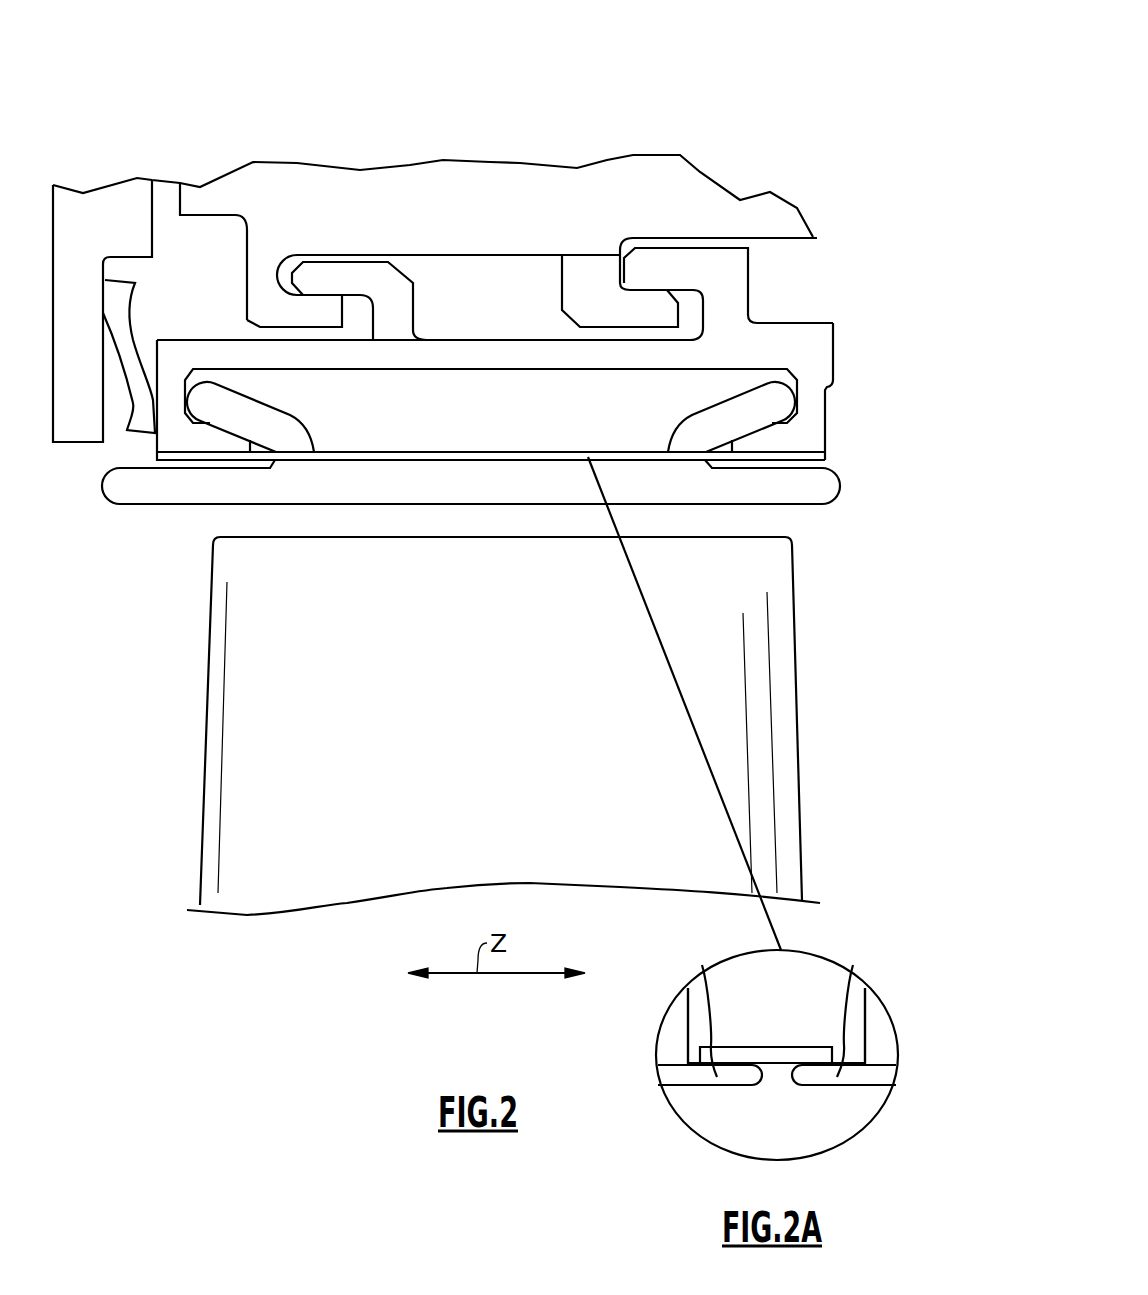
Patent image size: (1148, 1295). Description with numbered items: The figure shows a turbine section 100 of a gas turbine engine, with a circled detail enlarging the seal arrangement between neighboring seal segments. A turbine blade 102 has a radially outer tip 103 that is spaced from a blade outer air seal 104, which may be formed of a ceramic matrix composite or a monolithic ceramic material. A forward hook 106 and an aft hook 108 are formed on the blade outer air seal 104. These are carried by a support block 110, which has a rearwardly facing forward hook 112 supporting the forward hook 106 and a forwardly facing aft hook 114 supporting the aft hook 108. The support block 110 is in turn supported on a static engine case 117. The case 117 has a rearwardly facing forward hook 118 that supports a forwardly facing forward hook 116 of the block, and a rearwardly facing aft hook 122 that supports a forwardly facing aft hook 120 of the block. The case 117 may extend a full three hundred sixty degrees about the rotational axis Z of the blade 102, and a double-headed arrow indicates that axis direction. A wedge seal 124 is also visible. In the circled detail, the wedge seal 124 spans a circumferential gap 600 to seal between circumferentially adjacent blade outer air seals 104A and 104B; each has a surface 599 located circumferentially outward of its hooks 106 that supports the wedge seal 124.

In FIG. 2, the turbine section 100 is at (228, 96).
In FIG. 2, the turbine blade 102 is at (205, 745).
In FIG. 2, the radially outer tip 103 is at (235, 535).
In FIG. 2, the blade outer air seal 104 is at (112, 492).
In FIG. 2A, the blade outer air seal 104A is at (677, 1073).
In FIG. 2A, the blade outer air seal 104B is at (878, 1073).
In FIG. 2, the forward hook 106 is at (227, 403).
In FIG. 2A, the forward hook 106 is at (667, 1030).
In FIG. 2, the aft hook 108 is at (733, 413).
In FIG. 2, the support block 110 is at (487, 357).
In FIG. 2, the rearwardly facing forward hook 112 is at (193, 438).
In FIG. 2, the forwardly facing aft hook 114 is at (815, 435).
In FIG. 2, the forwardly facing forward hook 116 is at (342, 278).
In FIG. 2, the engine case 117 is at (400, 213).
In FIG. 2, the rearwardly facing forward hook 118 is at (288, 312).
In FIG. 2, the forwardly facing aft hook 120 is at (670, 265).
In FIG. 2, the rearwardly facing aft hook 122 is at (600, 292).
In FIG. 2, the wedge seal 124 is at (453, 458).
In FIG. 2A, the wedge seal 124 is at (768, 1053).
In FIG. 2A, the surface 599 is at (702, 965).
In FIG. 2A, the circumferential gap 600 is at (773, 1075).